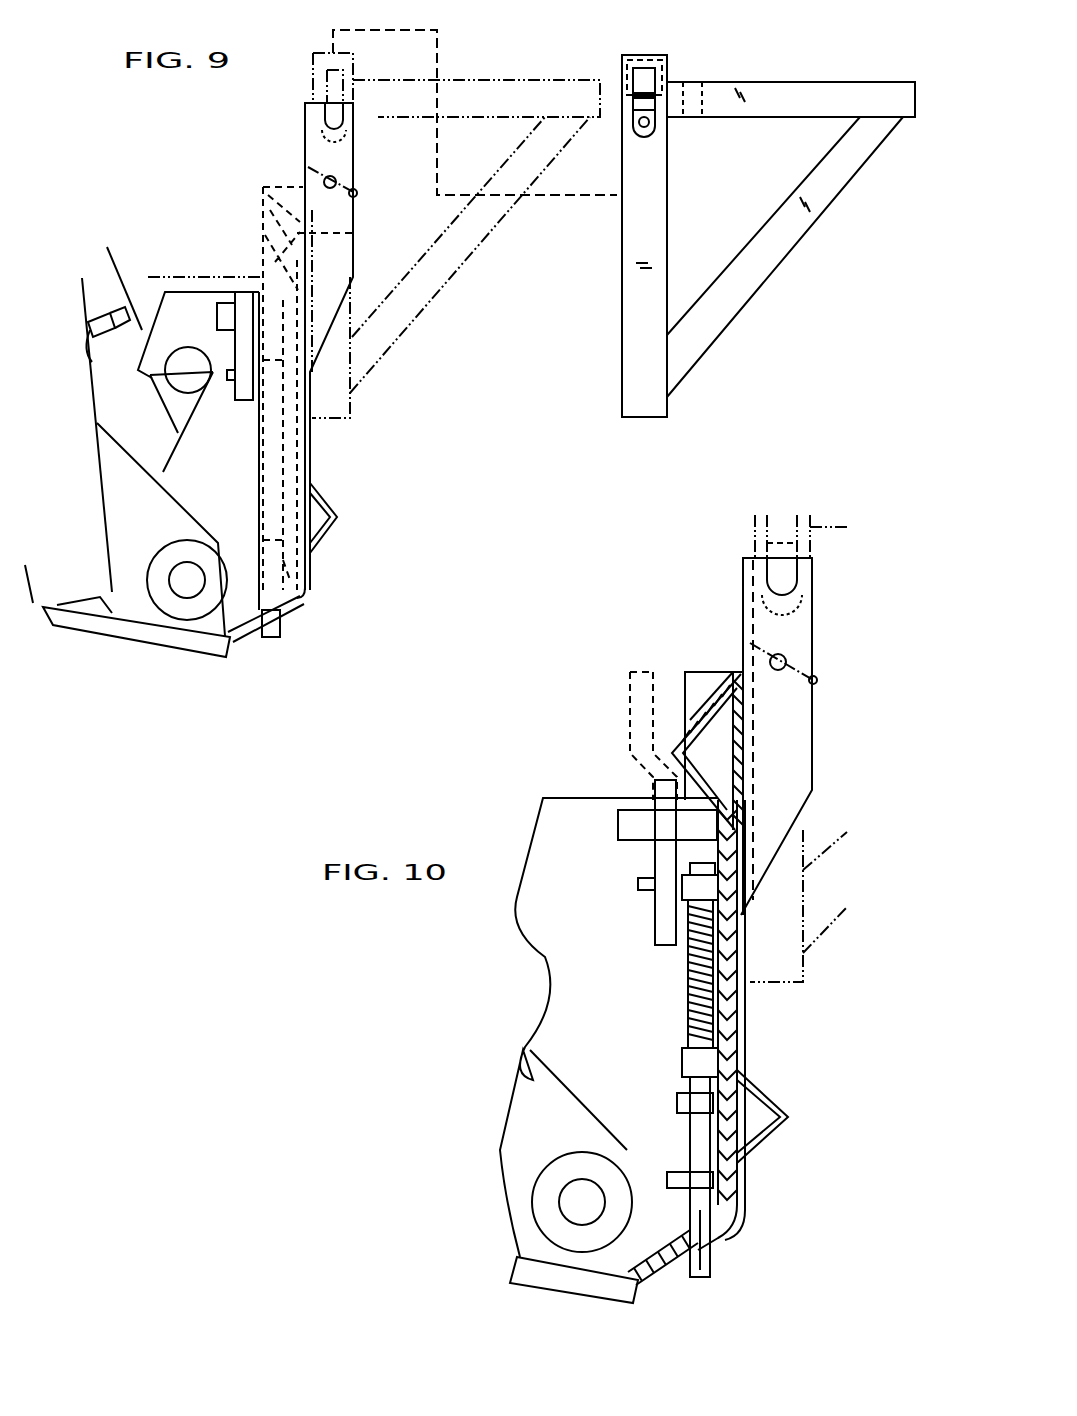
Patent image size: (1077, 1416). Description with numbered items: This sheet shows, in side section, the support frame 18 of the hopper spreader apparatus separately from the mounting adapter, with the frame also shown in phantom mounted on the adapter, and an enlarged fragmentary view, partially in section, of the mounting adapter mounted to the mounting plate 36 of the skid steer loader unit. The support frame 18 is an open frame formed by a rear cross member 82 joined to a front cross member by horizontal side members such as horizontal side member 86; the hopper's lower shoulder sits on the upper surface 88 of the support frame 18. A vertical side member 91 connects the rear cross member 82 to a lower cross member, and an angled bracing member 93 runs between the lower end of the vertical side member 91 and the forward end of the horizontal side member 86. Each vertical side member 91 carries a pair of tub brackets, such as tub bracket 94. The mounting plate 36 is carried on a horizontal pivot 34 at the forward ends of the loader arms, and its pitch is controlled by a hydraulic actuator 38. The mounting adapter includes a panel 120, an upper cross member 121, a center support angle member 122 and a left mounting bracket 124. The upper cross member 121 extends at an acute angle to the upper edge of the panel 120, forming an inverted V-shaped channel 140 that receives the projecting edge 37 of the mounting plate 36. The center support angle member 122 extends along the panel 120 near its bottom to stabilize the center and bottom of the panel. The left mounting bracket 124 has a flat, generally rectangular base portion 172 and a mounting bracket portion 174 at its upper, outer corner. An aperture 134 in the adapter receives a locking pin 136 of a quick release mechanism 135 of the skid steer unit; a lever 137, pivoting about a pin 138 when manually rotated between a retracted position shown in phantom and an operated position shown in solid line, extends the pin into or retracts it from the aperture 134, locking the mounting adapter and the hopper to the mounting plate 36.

In FIG. 9, the support frame 18 is at (750, 214).
In FIG. 9, the horizontal pivot 34 is at (176, 578).
In FIG. 10, the horizontal pivot 34 is at (572, 1195).
In FIG. 9, the mounting plate 36 is at (216, 496).
In FIG. 10, the mounting plate 36 is at (654, 1061).
In FIG. 9, the projecting edge 37 is at (353, 233).
In FIG. 10, the projecting edge 37 is at (743, 735).
In FIG. 9, the hydraulic actuator 38 is at (90, 360).
In FIG. 9, the rear cross member 82 is at (683, 80).
In FIG. 9, the horizontal side member 86 is at (860, 88).
In FIG. 9, the upper surface 88 is at (790, 82).
In FIG. 9, the vertical side member 91 is at (630, 338).
In FIG. 9, the bracing member 93 is at (753, 278).
In FIG. 9, the tub bracket 94 is at (640, 80).
In FIG. 10, the panel 120 is at (745, 1098).
In FIG. 9, the upper cross member 121 is at (262, 197).
In FIG. 10, the upper cross member 121 is at (713, 693).
In FIG. 9, the center support angle member 122 is at (337, 520).
In FIG. 10, the center support angle member 122 is at (770, 1133).
In FIG. 9, the left mounting bracket 124 is at (343, 152).
In FIG. 10, the left mounting bracket 124 is at (782, 632).
In FIG. 10, the aperture 134 is at (727, 1230).
In FIG. 9, the quick release mechanism 135 is at (212, 268).
In FIG. 10, the quick release mechanism 135 is at (650, 970).
In FIG. 9, the locking pin 136 is at (280, 620).
In FIG. 10, the locking pin 136 is at (680, 1270).
In FIG. 9, the lever 137 is at (238, 355).
In FIG. 10, the lever 137 is at (630, 715).
In FIG. 10, the pin 138 is at (643, 890).
In FIG. 9, the channel 140 is at (275, 182).
In FIG. 10, the channel 140 is at (733, 697).
In FIG. 9, the base portion 172 is at (310, 447).
In FIG. 10, the base portion 172 is at (745, 1023).
In FIG. 10, the mounting bracket portion 174 is at (803, 604).